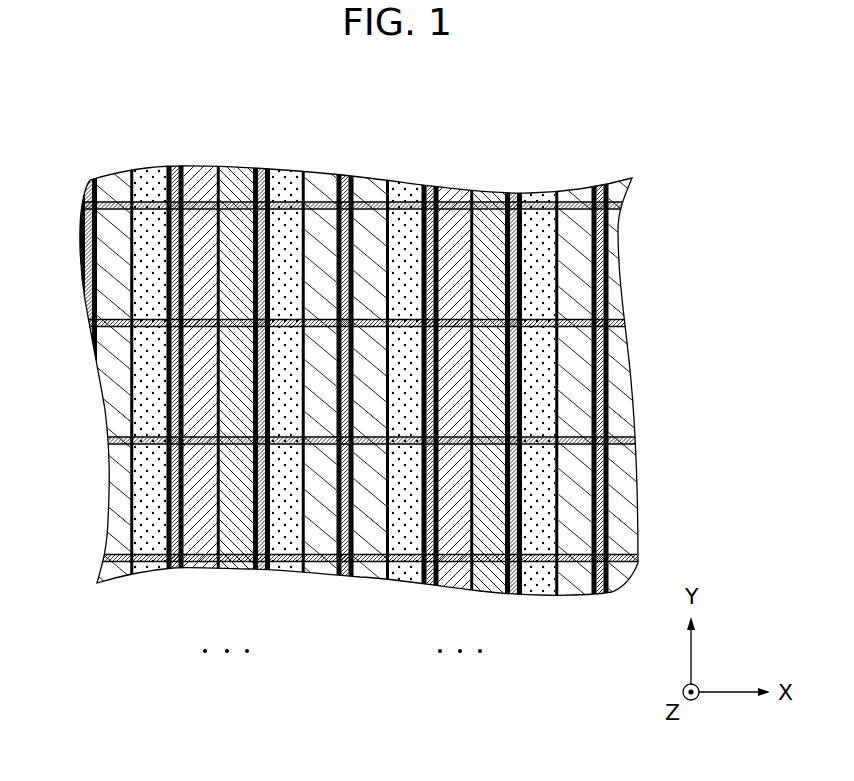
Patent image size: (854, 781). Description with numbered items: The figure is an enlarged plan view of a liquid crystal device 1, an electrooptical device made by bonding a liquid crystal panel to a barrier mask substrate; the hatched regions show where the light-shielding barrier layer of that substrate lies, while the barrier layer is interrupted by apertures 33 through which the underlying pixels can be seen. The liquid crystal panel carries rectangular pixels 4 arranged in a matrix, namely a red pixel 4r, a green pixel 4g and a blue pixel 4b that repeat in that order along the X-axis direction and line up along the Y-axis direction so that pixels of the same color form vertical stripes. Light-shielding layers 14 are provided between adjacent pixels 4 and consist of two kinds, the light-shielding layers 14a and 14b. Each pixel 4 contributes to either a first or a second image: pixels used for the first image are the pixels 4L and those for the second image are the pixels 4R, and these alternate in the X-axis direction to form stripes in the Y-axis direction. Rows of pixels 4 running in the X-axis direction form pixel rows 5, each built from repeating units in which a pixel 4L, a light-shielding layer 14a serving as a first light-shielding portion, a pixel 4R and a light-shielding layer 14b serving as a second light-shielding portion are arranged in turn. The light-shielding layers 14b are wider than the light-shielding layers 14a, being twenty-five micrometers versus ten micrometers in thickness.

The liquid crystal device 1 is at (617, 111).
The pixels 4 is at (217, 113).
The red pixel 4r is at (119, 188).
The green pixel 4g is at (153, 184).
The blue pixel 4b is at (203, 180).
The light-shielding layers 14 is at (450, 113).
The light-shielding layer (first light-shielding portion) 14a is at (460, 188).
The light-shielding layer (second light-shielding portion) 14b is at (328, 183).
The apertures 33 is at (590, 228).
The pixel rows 5 is at (703, 557).
The pixels for displaying a first image 4L is at (327, 409).
The pixels for displaying a second image 4R is at (363, 409).